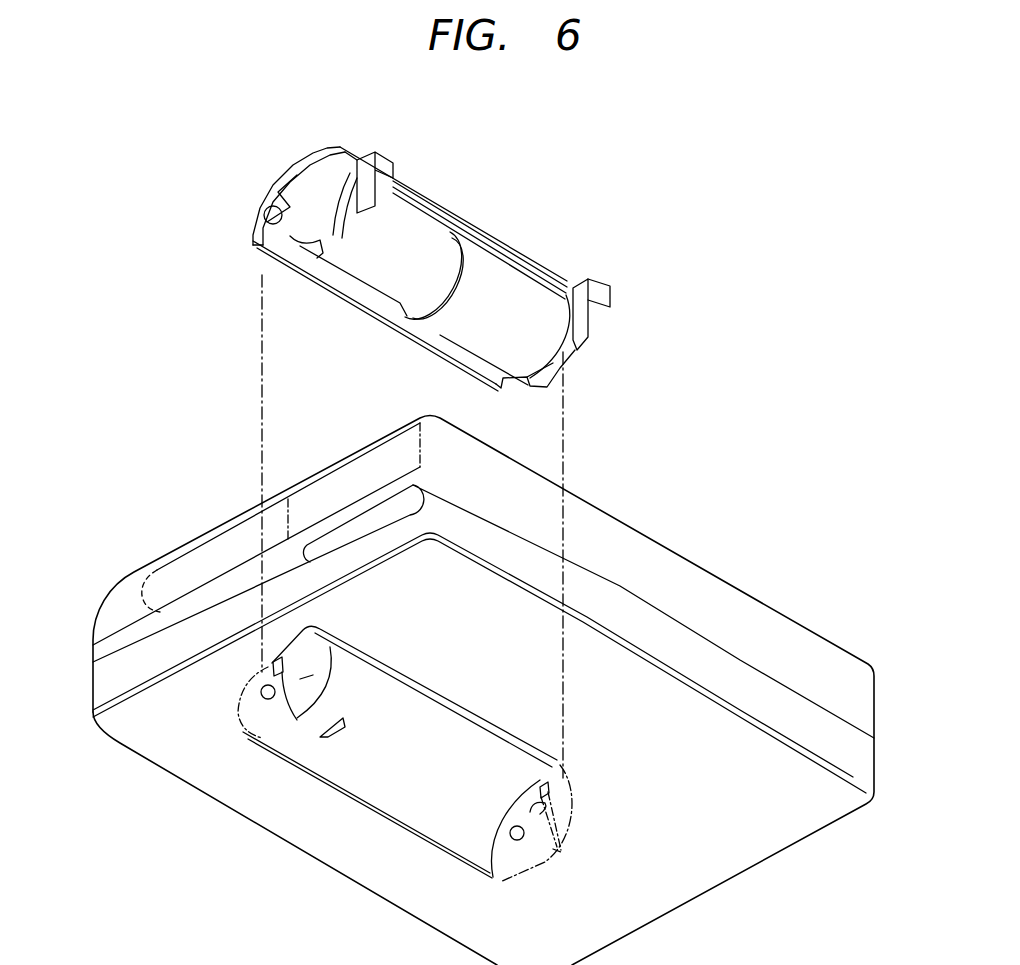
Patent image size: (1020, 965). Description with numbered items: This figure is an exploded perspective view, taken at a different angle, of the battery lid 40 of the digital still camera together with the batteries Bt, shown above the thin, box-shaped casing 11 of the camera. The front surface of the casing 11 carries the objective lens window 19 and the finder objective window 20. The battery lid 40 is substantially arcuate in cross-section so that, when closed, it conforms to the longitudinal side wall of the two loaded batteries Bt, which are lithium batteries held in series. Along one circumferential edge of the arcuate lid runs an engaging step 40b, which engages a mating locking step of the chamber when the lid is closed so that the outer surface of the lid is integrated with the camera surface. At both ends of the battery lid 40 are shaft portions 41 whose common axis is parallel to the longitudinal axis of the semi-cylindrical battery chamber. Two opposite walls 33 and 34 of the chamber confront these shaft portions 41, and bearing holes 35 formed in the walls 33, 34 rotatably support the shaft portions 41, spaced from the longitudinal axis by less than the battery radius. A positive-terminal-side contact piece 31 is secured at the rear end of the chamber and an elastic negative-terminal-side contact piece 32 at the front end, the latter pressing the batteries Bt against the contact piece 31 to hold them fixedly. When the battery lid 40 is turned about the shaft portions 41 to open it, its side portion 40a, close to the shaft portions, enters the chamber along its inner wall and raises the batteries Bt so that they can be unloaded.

The casing 11 is at (670, 560).
The objective lens window 19 is at (227, 547).
The finder objective window 20 is at (320, 500).
The positive-terminal-side contact piece 31 is at (313, 190).
The negative-terminal-side contact piece 32 is at (578, 352).
The wall 33 is at (300, 683).
The wall 34 is at (537, 813).
The bearing hole 35 is at (260, 692).
The battery lid 40 is at (280, 268).
The side portion 40a is at (357, 300).
The engaging step 40b is at (470, 223).
The shaft portion 41 is at (264, 211).
The battery Bt is at (413, 243).